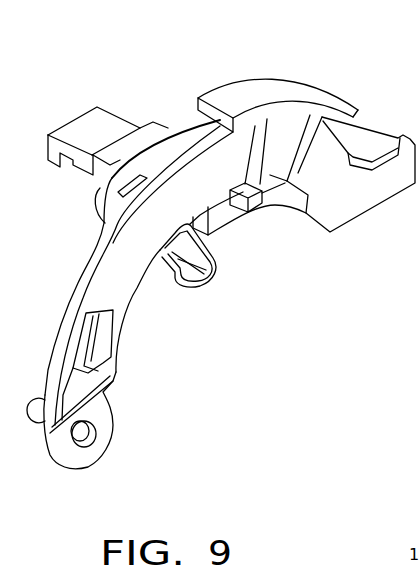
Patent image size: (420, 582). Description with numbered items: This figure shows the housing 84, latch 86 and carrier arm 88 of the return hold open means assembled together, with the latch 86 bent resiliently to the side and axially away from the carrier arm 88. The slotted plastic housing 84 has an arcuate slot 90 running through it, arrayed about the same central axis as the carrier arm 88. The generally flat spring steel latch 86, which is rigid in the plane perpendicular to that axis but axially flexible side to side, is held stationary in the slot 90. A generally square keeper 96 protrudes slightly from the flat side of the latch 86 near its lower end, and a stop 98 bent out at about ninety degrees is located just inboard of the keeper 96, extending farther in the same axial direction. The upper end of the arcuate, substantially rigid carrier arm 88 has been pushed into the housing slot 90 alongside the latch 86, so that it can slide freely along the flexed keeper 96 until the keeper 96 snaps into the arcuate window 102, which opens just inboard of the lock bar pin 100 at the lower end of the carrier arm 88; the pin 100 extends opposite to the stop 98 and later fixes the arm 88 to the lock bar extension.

The housing 84 is at (292, 78).
The latch 86 is at (142, 152).
The carrier arm 88 is at (188, 127).
The arcuate slot 90 is at (233, 192).
The keeper 96 is at (120, 192).
The stop 98 is at (193, 287).
The lock bar pin 100 is at (40, 398).
The window 102 is at (88, 314).